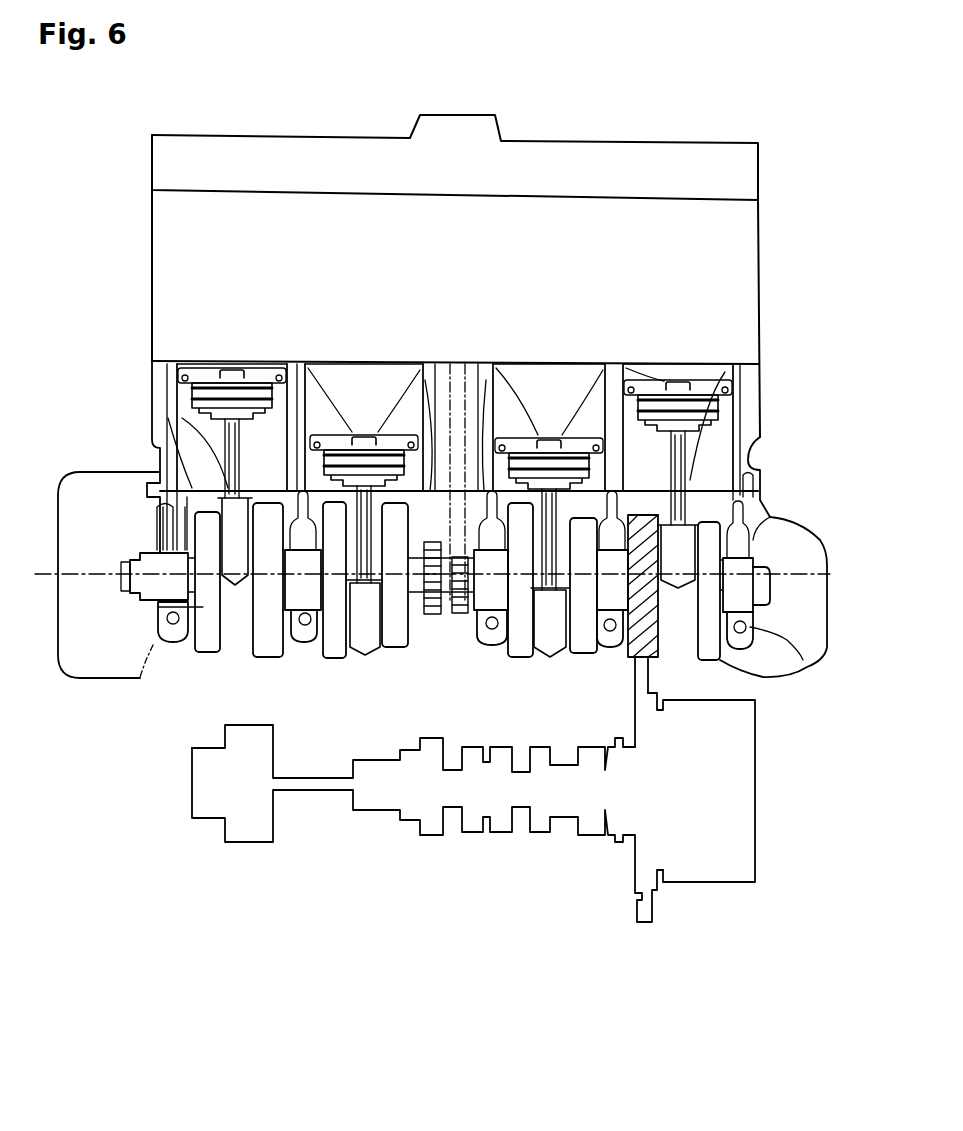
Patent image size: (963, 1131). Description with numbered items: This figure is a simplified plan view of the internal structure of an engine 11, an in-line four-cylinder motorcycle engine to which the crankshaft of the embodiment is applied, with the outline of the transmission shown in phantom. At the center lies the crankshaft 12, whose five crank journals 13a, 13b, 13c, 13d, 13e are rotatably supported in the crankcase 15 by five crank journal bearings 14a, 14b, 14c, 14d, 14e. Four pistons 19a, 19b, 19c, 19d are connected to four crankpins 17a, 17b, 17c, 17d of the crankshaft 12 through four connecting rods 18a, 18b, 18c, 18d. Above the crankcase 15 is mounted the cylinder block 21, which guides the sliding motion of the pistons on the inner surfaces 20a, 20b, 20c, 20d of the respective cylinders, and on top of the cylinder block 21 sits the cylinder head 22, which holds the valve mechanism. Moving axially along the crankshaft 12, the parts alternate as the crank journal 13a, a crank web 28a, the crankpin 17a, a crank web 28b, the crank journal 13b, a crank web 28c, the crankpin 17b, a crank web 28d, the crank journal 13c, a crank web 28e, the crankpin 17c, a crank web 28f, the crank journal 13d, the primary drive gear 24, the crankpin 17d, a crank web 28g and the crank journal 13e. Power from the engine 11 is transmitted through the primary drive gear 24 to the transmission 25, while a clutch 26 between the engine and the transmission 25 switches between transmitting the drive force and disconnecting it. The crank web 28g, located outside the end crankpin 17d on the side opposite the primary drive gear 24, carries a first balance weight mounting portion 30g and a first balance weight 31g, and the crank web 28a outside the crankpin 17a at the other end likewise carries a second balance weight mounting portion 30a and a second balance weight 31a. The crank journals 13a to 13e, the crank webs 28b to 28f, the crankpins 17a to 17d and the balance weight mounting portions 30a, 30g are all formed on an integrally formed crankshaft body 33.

The engine 11 is at (447, 547).
The crankshaft 12 is at (453, 619).
The crank journal 13a is at (147, 545).
The crank journal 13b is at (304, 430).
The crank journal 13c is at (480, 420).
The crank journal 13d is at (612, 420).
The crank journal 13e is at (748, 530).
The crank journal bearing 14a is at (175, 632).
The crank journal bearing 14b is at (300, 644).
The crank journal bearing 14c is at (495, 647).
The crank journal bearing 14d is at (610, 649).
The crank journal bearing 14e is at (747, 643).
The crankcase 15 is at (128, 427).
The crankpin 17a is at (175, 445).
The crankpin 17b is at (372, 650).
The crankpin 17c is at (550, 652).
The crankpin 17d is at (700, 495).
The connecting rod 18a is at (163, 368).
The connecting rod 18b is at (436, 420).
The connecting rod 18c is at (520, 440).
The connecting rod 18d is at (700, 400).
The piston 19a is at (205, 370).
The piston 19b is at (350, 437).
The piston 19c is at (550, 440).
The piston 19d is at (650, 382).
The cylinder inner surface 20a is at (258, 370).
The cylinder inner surface 20b is at (395, 437).
The cylinder inner surface 20c is at (590, 440).
The cylinder inner surface 20d is at (745, 400).
The cylinder block 21 is at (767, 393).
The cylinder head 22 is at (762, 270).
The primary drive gear 24 is at (660, 657).
The transmission 25 is at (650, 926).
The clutch 26 is at (757, 800).
The crank web 28a is at (207, 654).
The crank web 28b is at (270, 659).
The crank web 28c is at (337, 660).
The crank web 28d is at (397, 652).
The crank web 28e is at (520, 659).
The crank web 28f is at (585, 655).
The crank web 28g is at (722, 660).
The second balance weight mounting portion 30a is at (122, 472).
The first balance weight mounting portion 30g is at (752, 548).
The second balance weight 31a is at (157, 610).
The first balance weight 31g is at (807, 667).
The crankshaft body 33 is at (50, 533).